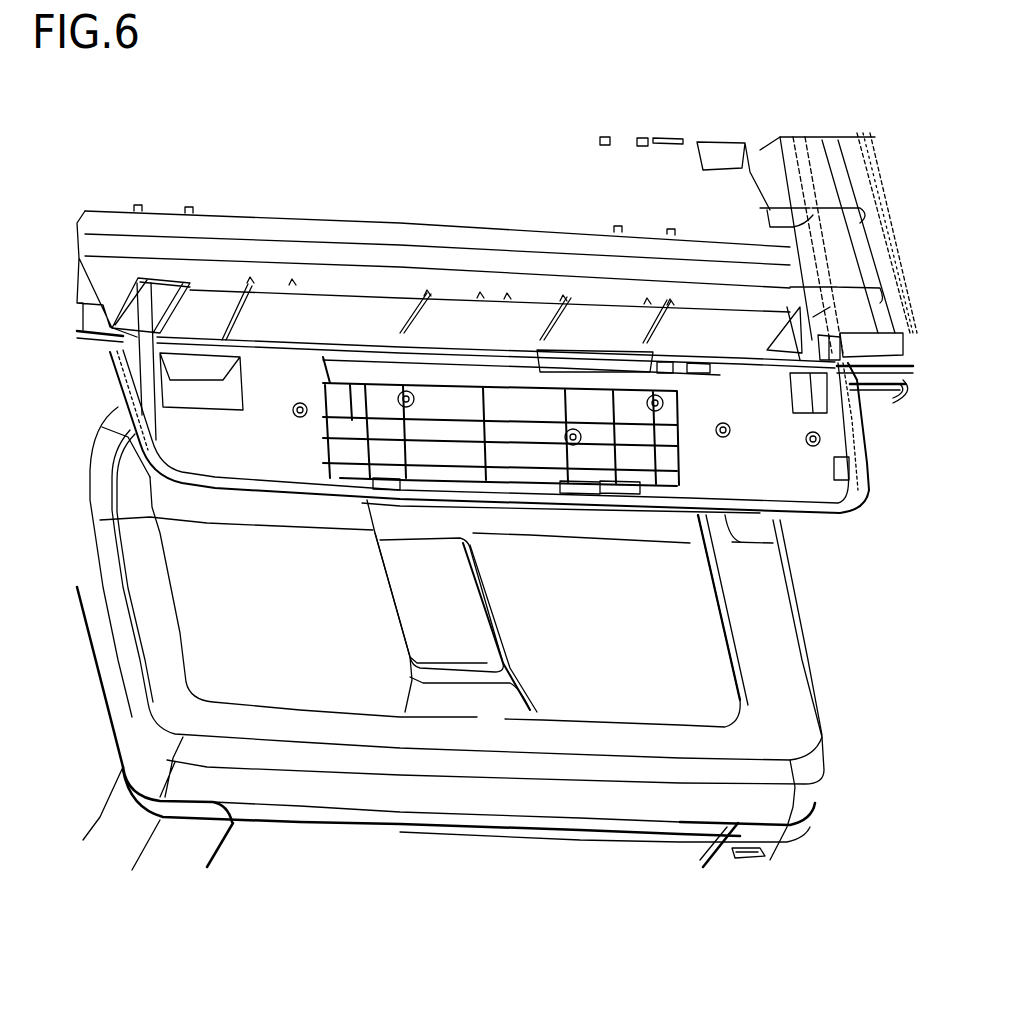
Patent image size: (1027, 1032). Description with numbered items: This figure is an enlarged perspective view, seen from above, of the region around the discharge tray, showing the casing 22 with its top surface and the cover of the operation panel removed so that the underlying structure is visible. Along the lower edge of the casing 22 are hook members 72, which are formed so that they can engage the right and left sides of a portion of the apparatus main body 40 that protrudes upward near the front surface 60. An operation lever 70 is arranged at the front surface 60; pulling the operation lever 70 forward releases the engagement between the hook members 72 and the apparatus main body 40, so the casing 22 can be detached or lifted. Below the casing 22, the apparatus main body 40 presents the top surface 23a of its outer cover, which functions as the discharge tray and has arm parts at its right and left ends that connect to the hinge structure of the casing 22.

The casing 22 is at (478, 170).
The hook members 72 is at (190, 282).
The front surface 60 is at (95, 348).
The operation lever 70 is at (865, 347).
The apparatus main body 40 is at (182, 867).
The top surface 23a is at (617, 687).